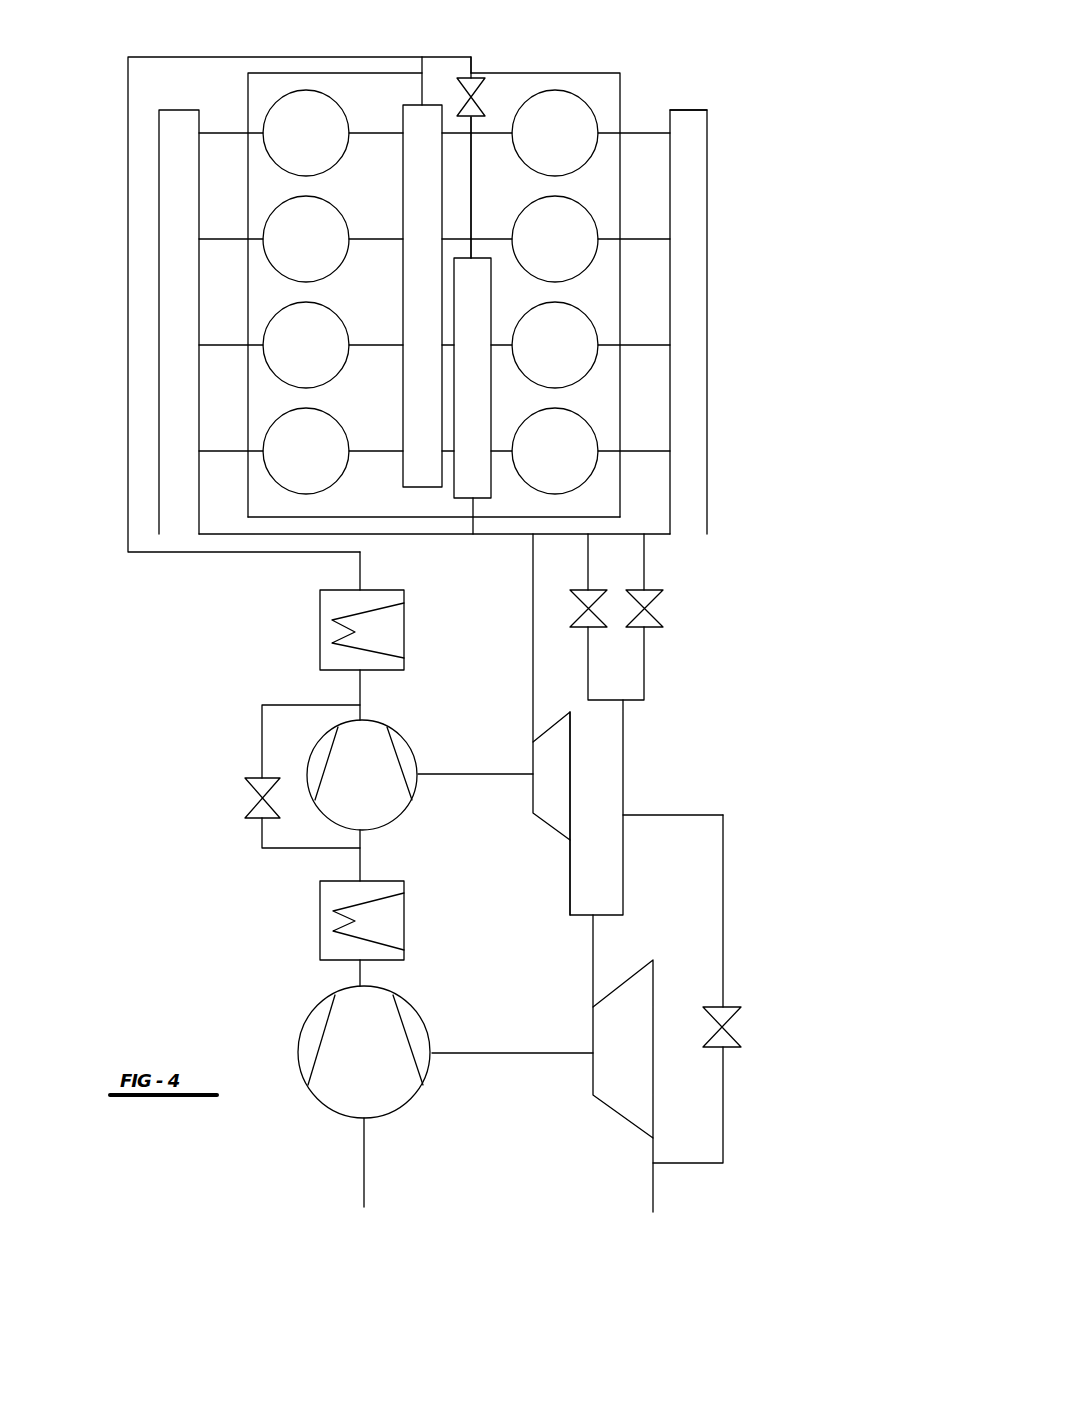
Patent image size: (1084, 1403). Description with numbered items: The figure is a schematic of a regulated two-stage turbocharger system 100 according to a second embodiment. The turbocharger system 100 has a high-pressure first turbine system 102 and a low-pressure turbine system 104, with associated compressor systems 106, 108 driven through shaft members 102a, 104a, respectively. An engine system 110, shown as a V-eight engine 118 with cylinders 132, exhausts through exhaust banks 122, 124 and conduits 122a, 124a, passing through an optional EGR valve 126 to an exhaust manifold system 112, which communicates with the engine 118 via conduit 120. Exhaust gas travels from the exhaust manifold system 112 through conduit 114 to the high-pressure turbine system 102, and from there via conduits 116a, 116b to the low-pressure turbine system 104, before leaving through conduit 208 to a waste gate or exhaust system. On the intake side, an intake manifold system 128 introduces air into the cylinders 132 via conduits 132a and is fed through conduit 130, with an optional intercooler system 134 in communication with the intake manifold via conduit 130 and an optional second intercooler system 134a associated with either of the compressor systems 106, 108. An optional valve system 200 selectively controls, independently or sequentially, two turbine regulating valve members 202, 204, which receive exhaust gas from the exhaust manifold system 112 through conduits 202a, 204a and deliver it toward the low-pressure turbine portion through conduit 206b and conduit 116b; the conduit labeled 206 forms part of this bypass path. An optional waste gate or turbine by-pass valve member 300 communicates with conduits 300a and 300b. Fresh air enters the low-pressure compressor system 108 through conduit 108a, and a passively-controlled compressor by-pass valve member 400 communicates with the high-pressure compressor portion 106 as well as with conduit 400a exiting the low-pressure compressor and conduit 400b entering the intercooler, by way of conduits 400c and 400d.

The regulated two-stage turbocharger system 100 is at (173, 817).
The first turbine system 102 is at (520, 828).
The shaft member 102a is at (503, 773).
The low-pressure turbine system 104 is at (592, 1130).
The shaft member 104a is at (508, 1053).
The high-pressure compressor system 106 is at (402, 725).
The low-pressure compressor system 108 is at (437, 1010).
The conduit 108a is at (366, 1145).
The engine system 110 is at (732, 92).
The exhaust manifold system 112 is at (484, 395).
The conduit 114 is at (528, 578).
The conduit 116a is at (570, 895).
The conduit 116b is at (593, 942).
The engine 118 is at (541, 80).
The conduit 120 is at (474, 141).
The exhaust bank 122 is at (188, 348).
The conduit 122a is at (228, 128).
The exhaust bank 124 is at (700, 355).
The conduit 124a is at (647, 128).
The EGR valve 126 is at (452, 86).
The intake manifold system 128 is at (434, 326).
The conduit 130 is at (263, 56).
The cylinders 132 is at (323, 105).
The conduits 132a is at (373, 136).
The intercooler system 134 is at (305, 601).
The second intercooler system 134a is at (308, 942).
The valve system 200 is at (722, 635).
The turbine regulating valve member 202 is at (568, 615).
The conduit 202a is at (585, 576).
The turbine regulating valve member 204 is at (621, 600).
The conduit 204a is at (646, 563).
The bypass conduit to second turbine 206 is at (622, 752).
The conduit 206b is at (623, 882).
The conduit 208 is at (655, 1185).
The waste gate 300 is at (752, 1020).
The conduit 300a is at (723, 870).
The conduit 300b is at (723, 1120).
The compressor by-pass system 400 is at (230, 797).
The conduit 400a is at (335, 866).
The conduit 400b is at (360, 688).
The conduit 400c is at (285, 850).
The conduit 400d is at (262, 727).